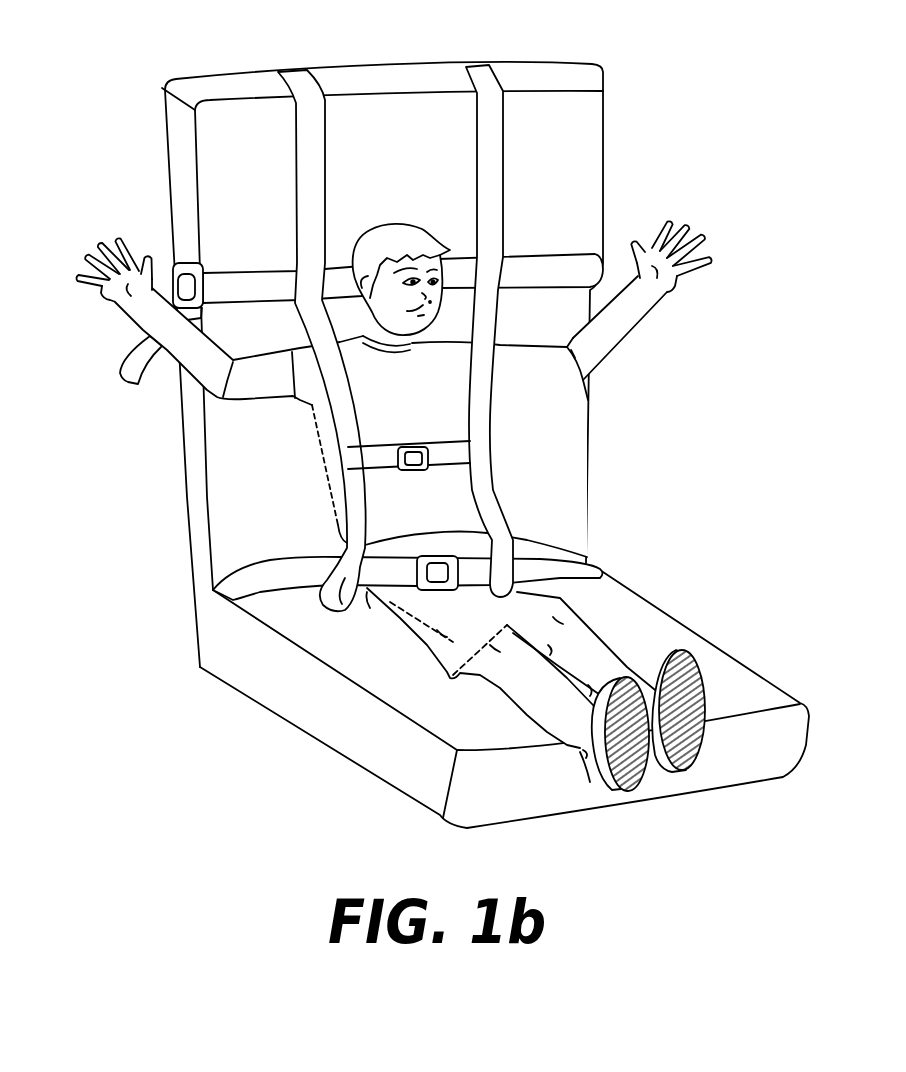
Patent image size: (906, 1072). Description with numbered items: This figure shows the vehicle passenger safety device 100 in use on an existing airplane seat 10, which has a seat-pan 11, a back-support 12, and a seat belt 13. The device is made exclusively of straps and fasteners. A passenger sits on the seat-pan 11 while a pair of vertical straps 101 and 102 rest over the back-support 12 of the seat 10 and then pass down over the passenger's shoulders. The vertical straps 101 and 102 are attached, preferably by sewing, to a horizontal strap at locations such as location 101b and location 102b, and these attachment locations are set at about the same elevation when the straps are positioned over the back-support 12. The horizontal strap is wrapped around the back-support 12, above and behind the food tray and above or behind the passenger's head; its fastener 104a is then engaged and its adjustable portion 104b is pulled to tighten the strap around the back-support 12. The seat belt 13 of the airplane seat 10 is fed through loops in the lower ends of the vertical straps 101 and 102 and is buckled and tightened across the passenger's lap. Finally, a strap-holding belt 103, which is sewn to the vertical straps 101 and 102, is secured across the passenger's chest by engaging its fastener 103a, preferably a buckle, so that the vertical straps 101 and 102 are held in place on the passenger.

The existing airplane seat 10 is at (461, 445).
The seat-pan 11 is at (693, 632).
The back-support 12 is at (603, 80).
The seat belt 13 is at (600, 572).
The vehicle passenger safety device 100 is at (384, 394).
The vertical strap 101 is at (255, 71).
The vertical strap 102 is at (477, 64).
The location 101b is at (312, 287).
The location 102b is at (483, 268).
The strap-holding belt 103 is at (523, 445).
The fastener 103a is at (420, 446).
The fastener 104a is at (175, 272).
The adjustable portion 104b is at (120, 372).